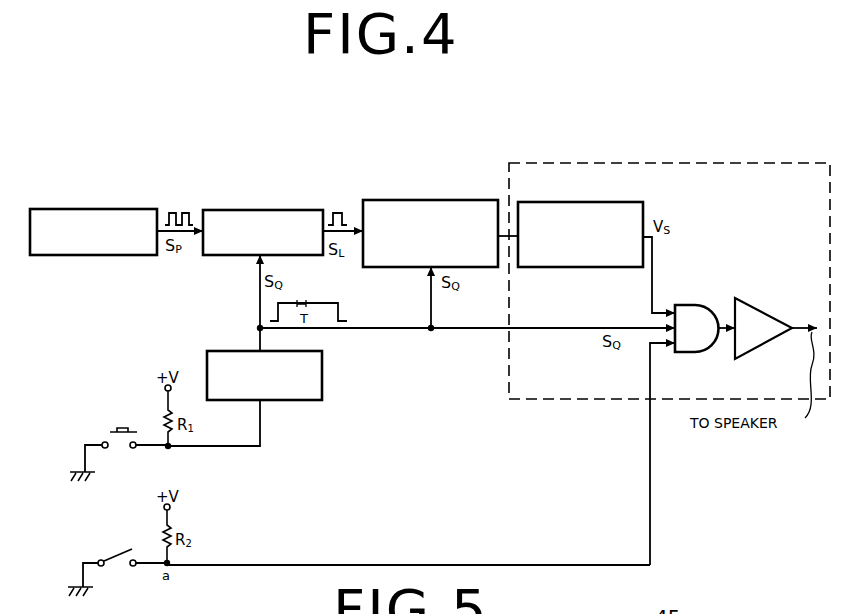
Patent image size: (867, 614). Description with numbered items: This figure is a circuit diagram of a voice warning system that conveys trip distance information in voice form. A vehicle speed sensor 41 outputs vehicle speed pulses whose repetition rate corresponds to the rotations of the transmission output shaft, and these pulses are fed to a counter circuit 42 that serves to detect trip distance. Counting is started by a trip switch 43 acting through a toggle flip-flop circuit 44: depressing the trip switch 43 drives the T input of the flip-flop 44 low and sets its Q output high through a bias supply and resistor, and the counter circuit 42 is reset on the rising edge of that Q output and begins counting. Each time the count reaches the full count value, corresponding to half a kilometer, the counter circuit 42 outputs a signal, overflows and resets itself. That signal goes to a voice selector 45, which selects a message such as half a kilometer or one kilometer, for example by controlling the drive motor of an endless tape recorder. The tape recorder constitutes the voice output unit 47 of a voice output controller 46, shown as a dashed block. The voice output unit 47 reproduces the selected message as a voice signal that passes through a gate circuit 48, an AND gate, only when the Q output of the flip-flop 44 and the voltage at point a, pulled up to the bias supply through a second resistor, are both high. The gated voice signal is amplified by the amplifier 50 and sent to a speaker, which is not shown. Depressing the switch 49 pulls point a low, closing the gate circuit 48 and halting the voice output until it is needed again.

The vehicle speed sensor 41 is at (103, 208).
The counter circuit 42 is at (273, 208).
The trip switch 43 is at (120, 427).
The toggle flip-flop circuit 44 is at (323, 358).
The voice selector 45 is at (445, 200).
The voice output controller 46 is at (780, 218).
The voice output unit 47 is at (585, 268).
The gate circuit 48 is at (692, 305).
The switch 49 is at (120, 567).
The amplifier 50 is at (757, 349).